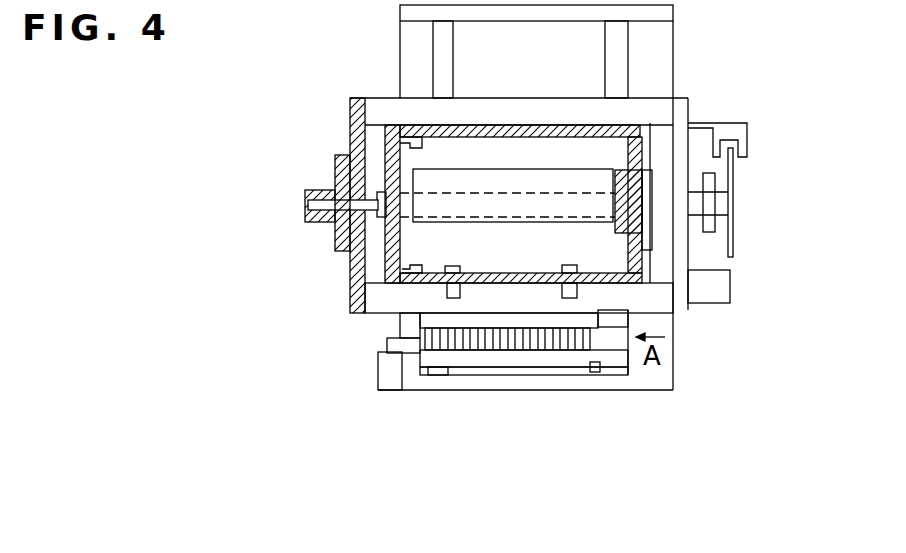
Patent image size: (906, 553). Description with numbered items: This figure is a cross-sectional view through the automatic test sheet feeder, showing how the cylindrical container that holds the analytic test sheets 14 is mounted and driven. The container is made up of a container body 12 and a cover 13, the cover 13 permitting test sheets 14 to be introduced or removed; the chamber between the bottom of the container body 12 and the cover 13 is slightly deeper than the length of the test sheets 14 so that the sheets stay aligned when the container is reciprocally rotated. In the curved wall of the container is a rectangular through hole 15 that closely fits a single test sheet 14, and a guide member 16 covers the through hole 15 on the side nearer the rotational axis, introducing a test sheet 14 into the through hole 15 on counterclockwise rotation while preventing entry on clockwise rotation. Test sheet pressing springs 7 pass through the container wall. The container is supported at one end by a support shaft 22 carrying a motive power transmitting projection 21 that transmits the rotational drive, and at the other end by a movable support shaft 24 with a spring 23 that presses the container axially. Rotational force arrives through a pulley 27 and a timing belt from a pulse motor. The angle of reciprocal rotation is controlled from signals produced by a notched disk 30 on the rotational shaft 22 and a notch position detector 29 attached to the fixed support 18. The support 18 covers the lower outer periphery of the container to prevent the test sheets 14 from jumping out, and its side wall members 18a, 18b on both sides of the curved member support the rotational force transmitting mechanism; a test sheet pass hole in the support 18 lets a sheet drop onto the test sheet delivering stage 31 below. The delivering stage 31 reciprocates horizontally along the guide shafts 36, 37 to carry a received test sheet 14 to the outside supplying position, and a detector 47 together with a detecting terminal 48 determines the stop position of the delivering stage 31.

The test sheet pressing springs 7 is at (674, 340).
The container body 12 is at (528, 125).
The cover 13 is at (395, 128).
The analytic test sheets 14 is at (492, 348).
The rectangular through hole 15 is at (448, 192).
The guide member 16 is at (550, 178).
The support 18 is at (647, 103).
The side wall member 18a is at (683, 311).
The side wall member 18b is at (358, 107).
The motive power transmitting projection 21 is at (641, 156).
The support shaft 22 is at (663, 210).
The spring 23 is at (340, 223).
The movable support shaft 24 is at (328, 203).
The pulley 27 is at (715, 230).
The notch position detector 29 is at (747, 135).
The notched disk 30 is at (737, 192).
The test sheet delivering stage 31 is at (580, 358).
The guide shaft 36 is at (440, 35).
The guide shaft 37 is at (622, 47).
The detector 47 is at (378, 377).
The detecting terminal 48 is at (388, 343).